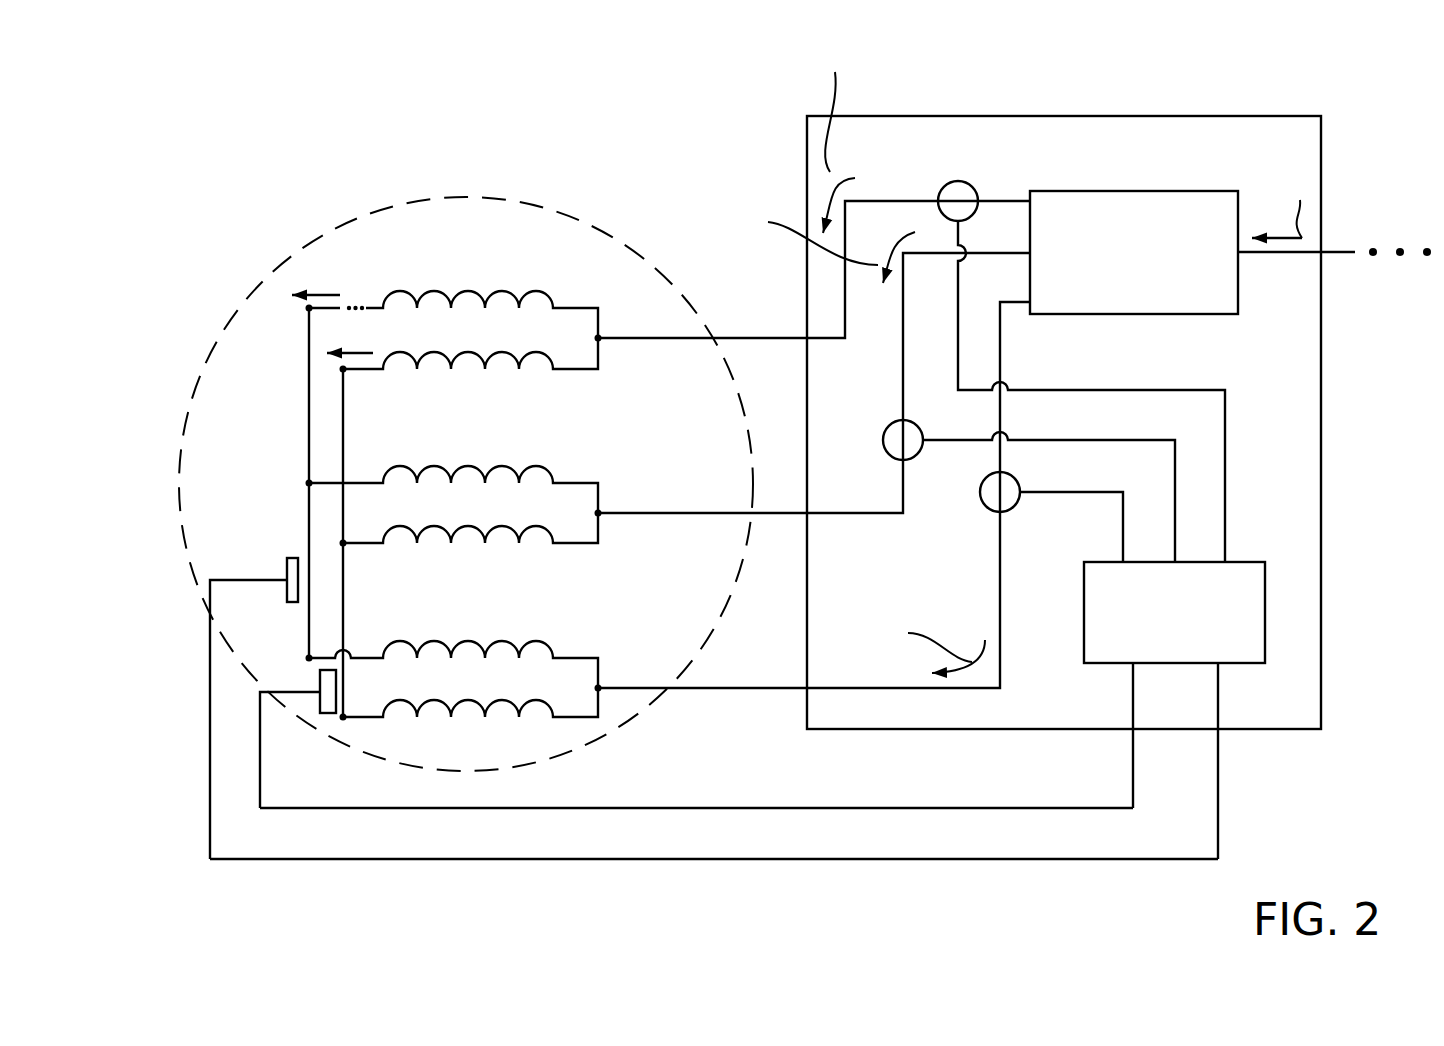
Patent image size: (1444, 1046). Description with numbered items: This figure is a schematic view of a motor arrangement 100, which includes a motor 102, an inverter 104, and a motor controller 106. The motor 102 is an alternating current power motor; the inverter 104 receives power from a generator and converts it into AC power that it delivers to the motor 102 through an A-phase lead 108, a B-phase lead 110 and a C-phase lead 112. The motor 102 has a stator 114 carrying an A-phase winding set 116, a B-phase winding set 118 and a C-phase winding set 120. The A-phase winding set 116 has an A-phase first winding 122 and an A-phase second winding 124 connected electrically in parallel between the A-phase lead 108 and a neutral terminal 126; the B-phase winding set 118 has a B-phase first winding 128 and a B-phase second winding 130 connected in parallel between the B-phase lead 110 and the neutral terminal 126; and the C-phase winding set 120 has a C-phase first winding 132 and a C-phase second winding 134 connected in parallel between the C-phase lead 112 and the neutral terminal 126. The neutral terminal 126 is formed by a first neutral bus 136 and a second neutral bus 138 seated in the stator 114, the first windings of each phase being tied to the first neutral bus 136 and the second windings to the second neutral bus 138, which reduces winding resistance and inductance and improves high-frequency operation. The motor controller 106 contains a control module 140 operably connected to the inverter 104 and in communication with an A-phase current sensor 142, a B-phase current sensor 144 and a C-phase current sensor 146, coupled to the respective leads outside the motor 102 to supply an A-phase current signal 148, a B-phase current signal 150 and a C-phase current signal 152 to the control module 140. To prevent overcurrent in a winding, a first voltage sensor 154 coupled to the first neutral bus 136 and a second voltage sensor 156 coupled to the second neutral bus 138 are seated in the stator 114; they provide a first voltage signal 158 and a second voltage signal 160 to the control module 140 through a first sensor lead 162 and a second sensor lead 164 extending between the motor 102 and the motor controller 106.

The motor arrangement 100 is at (590, 878).
The motor 102 is at (525, 182).
The inverter 104 is at (1224, 314).
The motor controller 106 is at (1275, 97).
The A-phase lead 108 is at (745, 338).
The B-phase lead 110 is at (782, 513).
The C-phase lead 112 is at (770, 688).
The stator 114 is at (335, 228).
The A-phase winding set 116 is at (566, 272).
The B-phase winding set 118 is at (588, 470).
The C-phase winding set 120 is at (590, 640).
The A-phase first winding 122 is at (402, 292).
The A-phase second winding 124 is at (435, 370).
The neutral terminal 126 is at (278, 378).
The B-phase first winding 128 is at (468, 470).
The B-phase second winding 130 is at (478, 545).
The C-phase first winding 132 is at (510, 652).
The C-phase second winding 134 is at (440, 722).
The first neutral bus 136 is at (309, 432).
The second neutral bus 138 is at (343, 586).
The control module 140 is at (1265, 645).
The A-phase current sensor 142 is at (940, 195).
The B-phase current sensor 144 is at (893, 423).
The C-phase current sensor 146 is at (980, 494).
The A-phase current signal 148 is at (1215, 368).
The B-phase current signal 150 is at (1163, 418).
The C-phase current signal 152 is at (1112, 470).
The first voltage sensor 154 is at (288, 573).
The second voltage sensor 156 is at (325, 715).
The first voltage signal 158 is at (247, 877).
The second voltage signal 160 is at (243, 793).
The first sensor lead 162 is at (890, 859).
The second sensor lead 164 is at (710, 808).